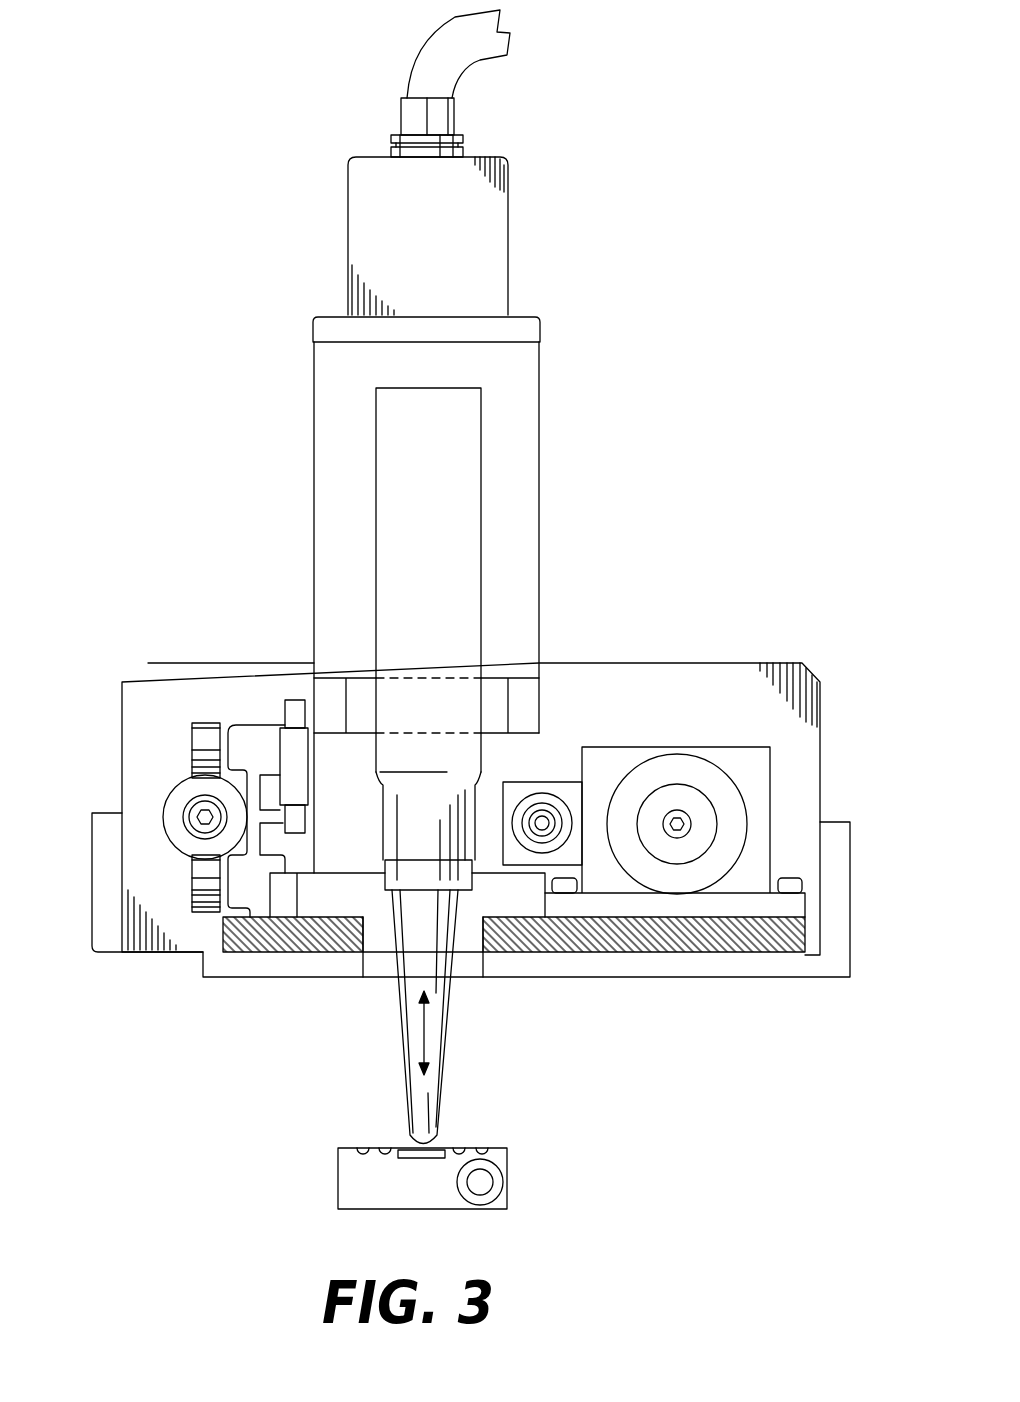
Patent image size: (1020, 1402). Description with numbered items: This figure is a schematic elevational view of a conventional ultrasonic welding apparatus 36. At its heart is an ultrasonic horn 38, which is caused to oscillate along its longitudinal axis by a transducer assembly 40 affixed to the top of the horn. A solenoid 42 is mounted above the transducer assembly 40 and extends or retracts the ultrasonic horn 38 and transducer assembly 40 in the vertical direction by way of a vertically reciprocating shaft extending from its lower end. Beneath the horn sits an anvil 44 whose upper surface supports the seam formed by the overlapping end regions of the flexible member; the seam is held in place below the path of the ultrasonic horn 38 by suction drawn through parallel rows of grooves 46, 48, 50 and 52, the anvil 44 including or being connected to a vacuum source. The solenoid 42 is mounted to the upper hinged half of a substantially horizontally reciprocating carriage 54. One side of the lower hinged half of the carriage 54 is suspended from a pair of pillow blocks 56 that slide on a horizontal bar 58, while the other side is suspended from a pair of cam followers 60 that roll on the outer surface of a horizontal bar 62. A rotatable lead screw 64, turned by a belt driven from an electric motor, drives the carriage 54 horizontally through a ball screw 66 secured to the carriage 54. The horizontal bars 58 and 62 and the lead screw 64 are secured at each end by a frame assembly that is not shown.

The ultrasonic welding apparatus 36 is at (292, 270).
The ultrasonic horn 38 is at (447, 1040).
The transducer assembly 40 is at (523, 463).
The solenoid 42 is at (486, 267).
The anvil 44 is at (370, 1210).
The groove 46 is at (363, 1146).
The groove 48 is at (387, 1146).
The groove 50 is at (459, 1146).
The groove 52 is at (482, 1146).
The horizontally reciprocating carriage 54 is at (256, 708).
The pillow blocks 56 is at (753, 760).
The horizontal bar 58 is at (677, 768).
The cam followers 60 is at (192, 758).
The horizontal bar 62 is at (163, 813).
The lead screw 64 is at (541, 815).
The ball screw 66 is at (558, 787).